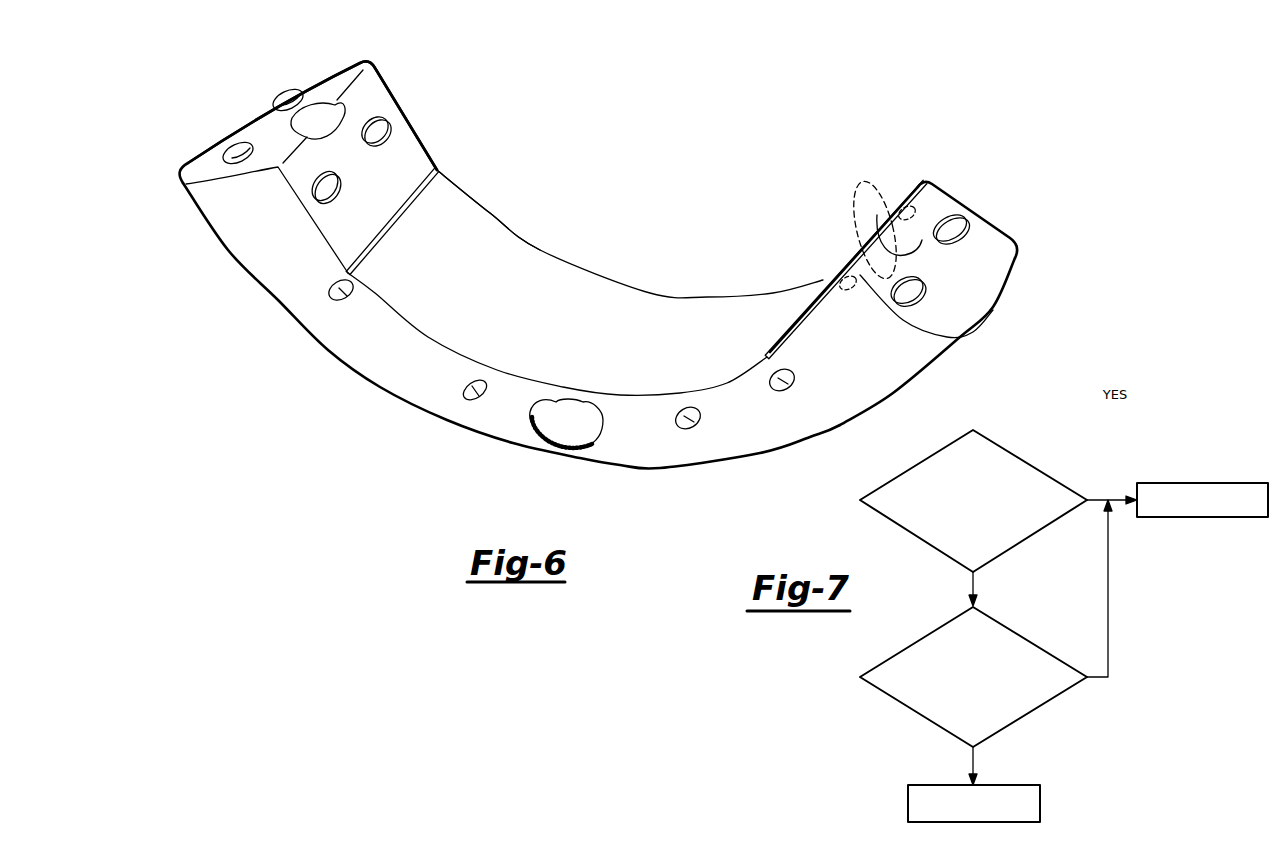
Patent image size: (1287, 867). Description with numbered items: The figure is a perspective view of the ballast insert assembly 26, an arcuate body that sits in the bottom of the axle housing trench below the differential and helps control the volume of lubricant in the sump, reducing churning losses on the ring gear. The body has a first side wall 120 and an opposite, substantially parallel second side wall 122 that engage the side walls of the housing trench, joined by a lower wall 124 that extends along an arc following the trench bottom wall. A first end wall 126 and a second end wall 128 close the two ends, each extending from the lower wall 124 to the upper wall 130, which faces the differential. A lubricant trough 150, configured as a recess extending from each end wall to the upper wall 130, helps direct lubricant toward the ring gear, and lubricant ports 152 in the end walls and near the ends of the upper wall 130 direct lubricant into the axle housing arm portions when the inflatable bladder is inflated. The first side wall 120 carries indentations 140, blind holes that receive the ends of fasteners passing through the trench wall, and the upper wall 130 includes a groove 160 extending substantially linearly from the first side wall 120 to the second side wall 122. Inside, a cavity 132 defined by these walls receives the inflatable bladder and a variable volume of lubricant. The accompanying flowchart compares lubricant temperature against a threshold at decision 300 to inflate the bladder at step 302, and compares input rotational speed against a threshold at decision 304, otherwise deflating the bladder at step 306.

In FIG. 6, the ballast insert assembly 26 is at (630, 140).
In FIG. 6, the first side wall 120 is at (433, 392).
In FIG. 6, the second side wall 122 is at (528, 240).
In FIG. 6, the lower wall 124 is at (993, 305).
In FIG. 6, the first end wall 126 is at (230, 133).
In FIG. 6, the second end wall 128 is at (942, 203).
In FIG. 6, the upper wall 130 is at (463, 223).
In FIG. 6, the cavity 132 is at (567, 423).
In FIG. 6, the indentations 140 is at (467, 380).
In FIG. 6, the lubricant trough 150 is at (367, 64).
In FIG. 6, the lubricant ports 152 is at (245, 145).
In FIG. 6, the groove 160 is at (436, 172).
In FIG. 7, the lubricant temperature decision step 300 is at (890, 480).
In FIG. 7, the inflate bladder step 302 is at (1202, 483).
In FIG. 7, the input rotational speed decision step 304 is at (930, 633).
In FIG. 7, the deflate bladder step 306 is at (908, 807).